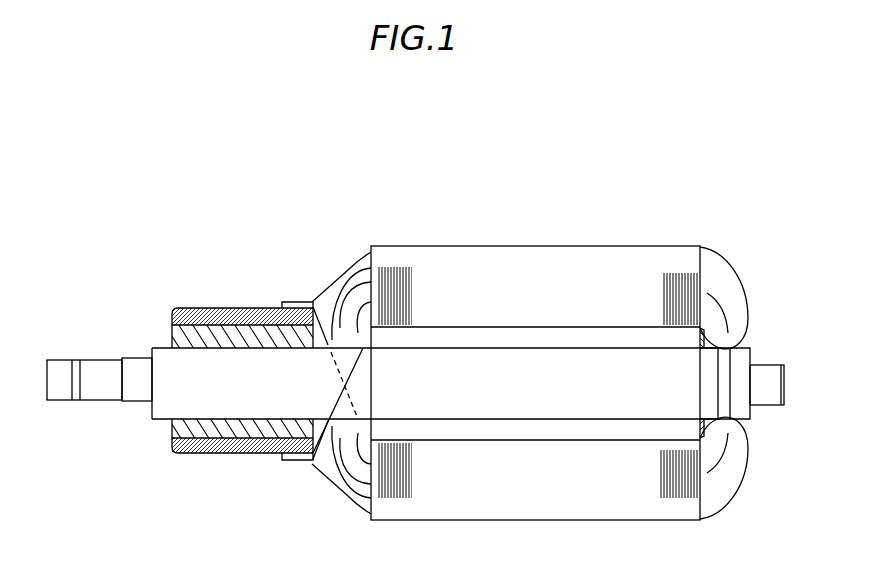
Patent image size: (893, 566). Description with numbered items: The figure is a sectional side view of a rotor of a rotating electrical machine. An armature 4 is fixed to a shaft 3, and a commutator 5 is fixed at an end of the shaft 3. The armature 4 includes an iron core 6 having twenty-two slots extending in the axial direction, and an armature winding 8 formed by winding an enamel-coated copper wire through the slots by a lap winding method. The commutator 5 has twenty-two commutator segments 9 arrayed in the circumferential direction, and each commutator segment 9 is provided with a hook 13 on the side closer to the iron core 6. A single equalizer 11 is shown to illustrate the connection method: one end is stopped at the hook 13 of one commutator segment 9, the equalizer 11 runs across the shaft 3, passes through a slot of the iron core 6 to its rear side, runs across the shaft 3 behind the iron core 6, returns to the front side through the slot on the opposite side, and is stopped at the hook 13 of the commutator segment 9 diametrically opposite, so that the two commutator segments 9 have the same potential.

The shaft 3 is at (160, 350).
The armature 4 is at (346, 251).
The commutator 5 is at (230, 312).
The iron core 6 is at (520, 258).
The armature winding 8 is at (720, 280).
The commutator segment 9 is at (200, 307).
The equalizer 11 is at (313, 472).
The hook 13 is at (293, 302).